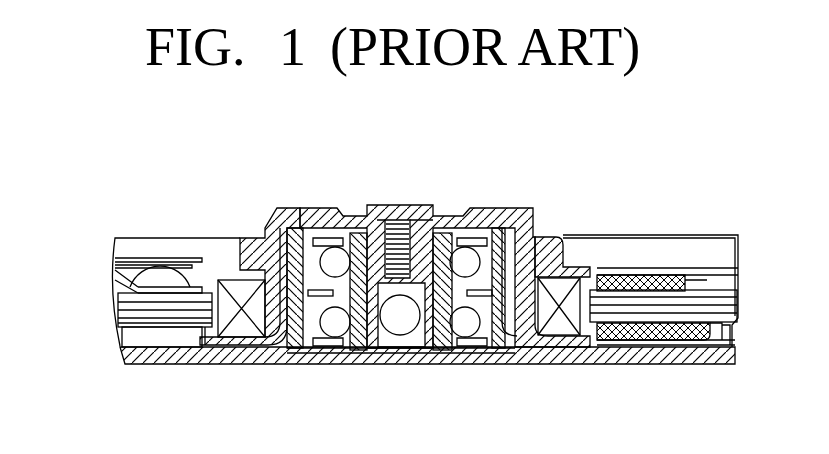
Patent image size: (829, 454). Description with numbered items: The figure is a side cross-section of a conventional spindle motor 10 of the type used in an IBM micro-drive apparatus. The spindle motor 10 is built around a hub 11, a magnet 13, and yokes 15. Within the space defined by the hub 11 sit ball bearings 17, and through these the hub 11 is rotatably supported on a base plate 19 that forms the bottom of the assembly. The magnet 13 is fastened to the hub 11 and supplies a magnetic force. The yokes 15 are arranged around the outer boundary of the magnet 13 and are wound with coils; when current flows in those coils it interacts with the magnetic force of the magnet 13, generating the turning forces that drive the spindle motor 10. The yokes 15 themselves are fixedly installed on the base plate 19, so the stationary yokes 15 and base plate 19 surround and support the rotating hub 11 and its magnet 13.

The spindle motor 10 is at (686, 163).
The hub 11 is at (520, 206).
The magnet 13 is at (556, 285).
The yokes 15 is at (648, 300).
The ball bearings 17 is at (464, 330).
The base plate 19 is at (598, 362).